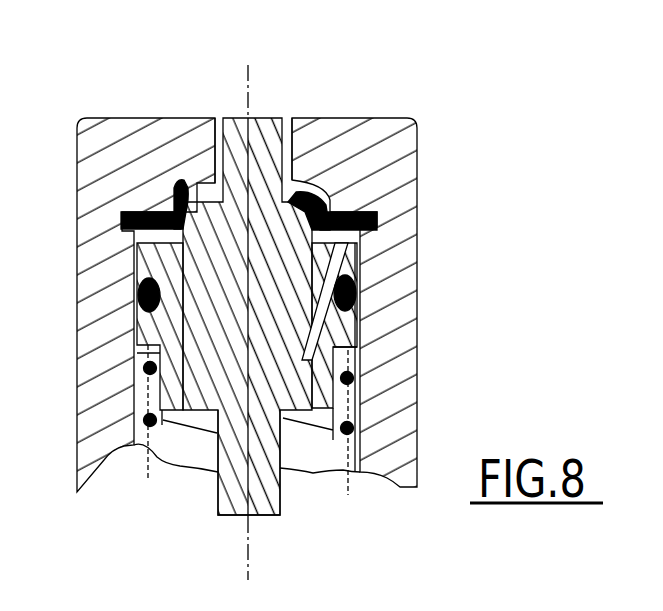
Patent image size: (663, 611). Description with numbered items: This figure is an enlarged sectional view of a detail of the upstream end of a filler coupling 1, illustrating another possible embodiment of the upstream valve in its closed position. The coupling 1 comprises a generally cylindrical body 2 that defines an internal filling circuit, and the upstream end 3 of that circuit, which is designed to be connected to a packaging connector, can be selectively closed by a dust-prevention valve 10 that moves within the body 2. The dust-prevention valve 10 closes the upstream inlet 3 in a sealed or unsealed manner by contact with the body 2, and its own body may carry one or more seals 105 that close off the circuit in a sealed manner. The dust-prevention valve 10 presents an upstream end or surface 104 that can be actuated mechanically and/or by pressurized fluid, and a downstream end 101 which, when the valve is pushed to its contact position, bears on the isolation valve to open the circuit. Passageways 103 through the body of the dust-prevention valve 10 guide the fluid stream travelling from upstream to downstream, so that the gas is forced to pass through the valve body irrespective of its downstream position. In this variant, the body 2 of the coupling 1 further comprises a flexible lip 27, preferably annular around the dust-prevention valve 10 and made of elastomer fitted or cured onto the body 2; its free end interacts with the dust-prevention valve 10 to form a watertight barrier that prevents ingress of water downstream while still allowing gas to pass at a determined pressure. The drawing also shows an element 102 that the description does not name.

The filler coupling 1 is at (277, 313).
The body 2 is at (385, 168).
The upstream end 3 is at (274, 110).
The dust-prevention valve 10 is at (225, 262).
The flexible lip 27 is at (182, 188).
The downstream end 101 is at (219, 512).
The lower ring 102 is at (322, 388).
The passageways 103 is at (310, 327).
The upstream end or surface 104 is at (231, 112).
The seals 105 is at (360, 288).